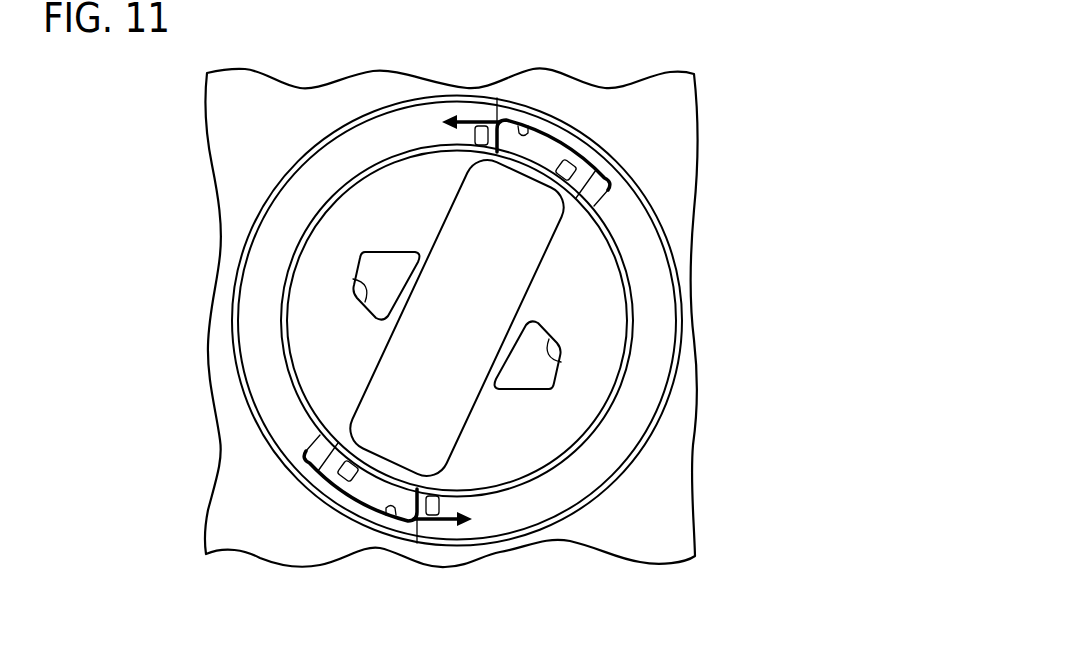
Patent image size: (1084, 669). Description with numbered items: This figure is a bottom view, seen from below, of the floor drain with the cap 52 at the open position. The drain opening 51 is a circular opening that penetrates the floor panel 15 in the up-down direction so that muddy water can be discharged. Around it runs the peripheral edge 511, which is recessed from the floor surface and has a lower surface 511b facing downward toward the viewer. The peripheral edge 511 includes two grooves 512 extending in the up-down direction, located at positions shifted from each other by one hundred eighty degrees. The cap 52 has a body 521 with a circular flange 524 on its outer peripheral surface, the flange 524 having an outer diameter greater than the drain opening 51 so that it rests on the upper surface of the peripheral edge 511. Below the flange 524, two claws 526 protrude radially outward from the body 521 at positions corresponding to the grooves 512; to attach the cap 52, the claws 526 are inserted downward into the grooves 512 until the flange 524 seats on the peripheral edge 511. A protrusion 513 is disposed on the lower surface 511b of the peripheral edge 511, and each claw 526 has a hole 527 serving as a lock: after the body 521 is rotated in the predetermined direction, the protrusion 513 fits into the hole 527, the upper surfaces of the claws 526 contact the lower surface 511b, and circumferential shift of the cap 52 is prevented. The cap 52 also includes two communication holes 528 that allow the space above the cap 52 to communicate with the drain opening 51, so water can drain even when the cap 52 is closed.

The floor panel 15 is at (222, 133).
The drain opening 51 is at (336, 211).
The cap 52 is at (628, 394).
The peripheral edge 511 is at (650, 258).
The lower surface 511b is at (265, 372).
The groove 512 is at (526, 132).
The protrusion 513 is at (478, 122).
The body 521 is at (607, 228).
The flange 524 is at (315, 462).
The claw 526 is at (555, 148).
The hole 527 is at (567, 165).
The communication hole 528 is at (355, 278).